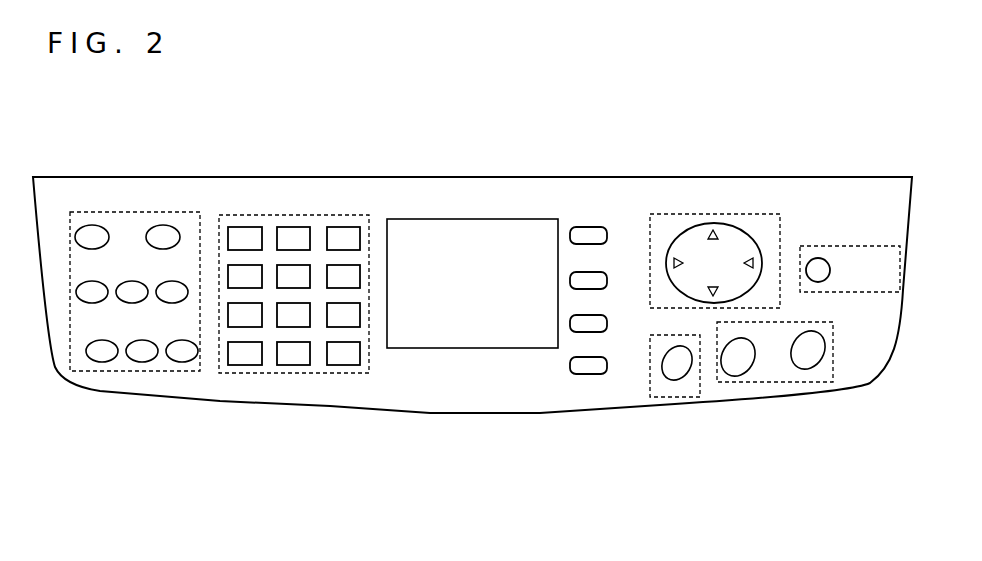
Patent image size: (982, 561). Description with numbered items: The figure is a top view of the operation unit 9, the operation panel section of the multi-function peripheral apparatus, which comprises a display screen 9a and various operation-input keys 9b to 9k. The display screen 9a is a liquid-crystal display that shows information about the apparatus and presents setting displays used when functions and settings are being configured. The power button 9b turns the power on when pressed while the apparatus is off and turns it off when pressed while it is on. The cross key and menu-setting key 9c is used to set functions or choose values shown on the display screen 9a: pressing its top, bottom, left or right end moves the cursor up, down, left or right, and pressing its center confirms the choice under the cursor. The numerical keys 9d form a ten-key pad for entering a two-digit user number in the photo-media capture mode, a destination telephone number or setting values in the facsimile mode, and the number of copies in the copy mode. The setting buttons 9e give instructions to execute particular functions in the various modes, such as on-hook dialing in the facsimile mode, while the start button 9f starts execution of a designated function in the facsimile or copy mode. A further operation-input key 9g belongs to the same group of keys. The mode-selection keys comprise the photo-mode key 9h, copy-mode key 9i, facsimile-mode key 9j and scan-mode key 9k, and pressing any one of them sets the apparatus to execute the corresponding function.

The operation unit 9 is at (824, 418).
The display screen 9a is at (421, 218).
The power button 9b is at (816, 245).
The cross key and menu-setting key 9c is at (697, 212).
The numerical keys (ten-key pad) 9d is at (270, 375).
The setting buttons 9e is at (176, 378).
The start button 9f is at (674, 398).
The operation-input key 9g is at (759, 385).
The photo-mode key 9h is at (608, 236).
The copy-mode key 9i is at (608, 281).
The facsimile-mode key 9j is at (608, 324).
The scan-mode key 9k is at (608, 366).